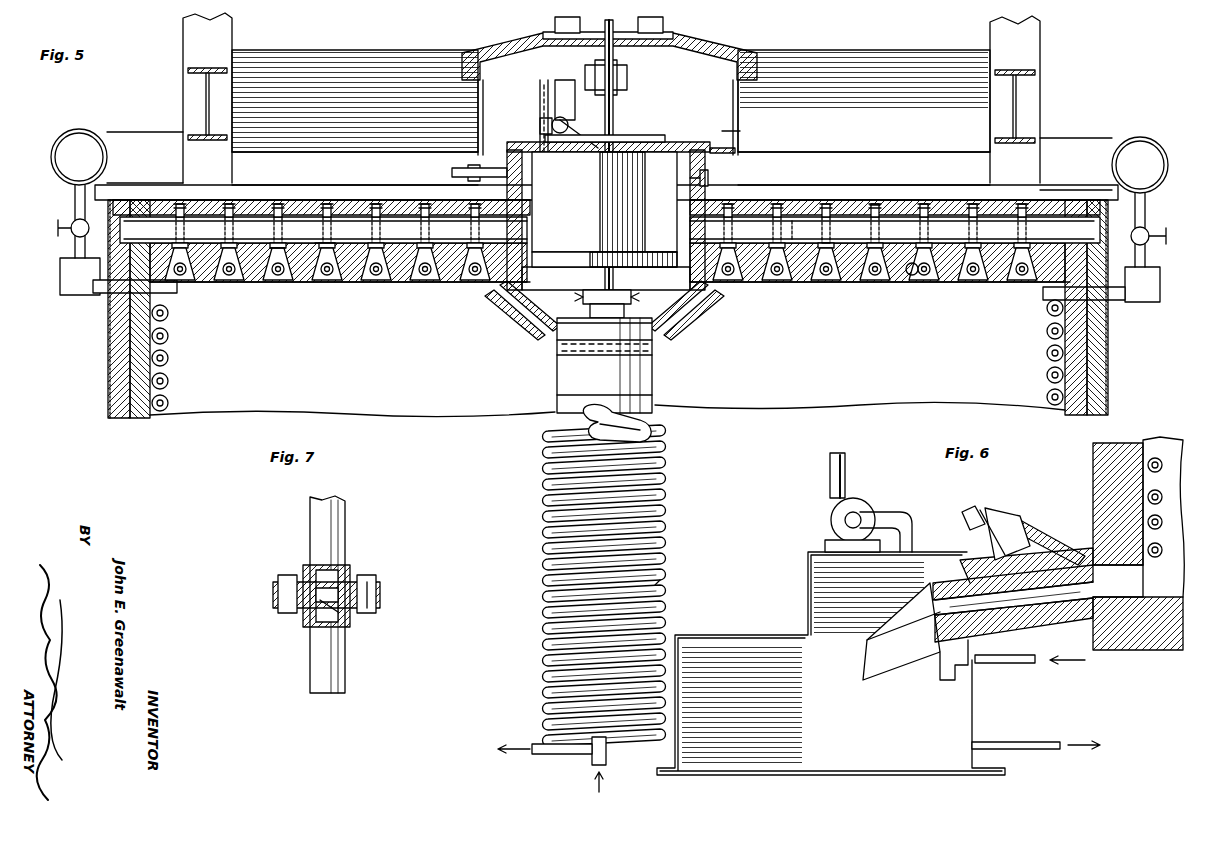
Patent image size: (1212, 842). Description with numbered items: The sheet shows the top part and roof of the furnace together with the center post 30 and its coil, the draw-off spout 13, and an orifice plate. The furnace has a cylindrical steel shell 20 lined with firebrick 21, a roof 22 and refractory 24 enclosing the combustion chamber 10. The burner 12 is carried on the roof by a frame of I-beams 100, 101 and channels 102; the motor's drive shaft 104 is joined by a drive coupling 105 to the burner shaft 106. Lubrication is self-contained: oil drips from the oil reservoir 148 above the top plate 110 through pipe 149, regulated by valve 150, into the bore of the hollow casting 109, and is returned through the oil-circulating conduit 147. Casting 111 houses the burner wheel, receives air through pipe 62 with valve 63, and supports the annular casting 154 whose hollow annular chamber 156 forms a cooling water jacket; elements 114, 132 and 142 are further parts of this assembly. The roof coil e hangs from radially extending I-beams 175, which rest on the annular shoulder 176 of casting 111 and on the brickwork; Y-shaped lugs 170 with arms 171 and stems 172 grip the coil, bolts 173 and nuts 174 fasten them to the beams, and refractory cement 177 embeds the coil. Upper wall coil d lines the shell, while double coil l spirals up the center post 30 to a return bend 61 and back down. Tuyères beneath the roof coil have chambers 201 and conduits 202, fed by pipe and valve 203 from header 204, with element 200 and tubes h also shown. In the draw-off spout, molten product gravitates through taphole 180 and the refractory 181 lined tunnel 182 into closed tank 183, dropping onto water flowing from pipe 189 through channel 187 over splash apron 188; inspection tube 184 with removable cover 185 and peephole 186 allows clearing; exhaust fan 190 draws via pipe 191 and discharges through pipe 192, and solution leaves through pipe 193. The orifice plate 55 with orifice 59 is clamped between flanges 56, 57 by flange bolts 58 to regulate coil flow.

In FIG. 5, the combustion chamber 10 is at (350, 386).
In FIG. 5, the burner 12 is at (541, 361).
In FIG. 6, the draw-off spout 13 is at (1056, 518).
In FIG. 5, the cylindrical steel shell 20 is at (1108, 353).
In FIG. 5, the firebrick 21 is at (1090, 394).
In FIG. 5, the roof 22 is at (330, 138).
In FIG. 5, the refractory 24 is at (358, 197).
In FIG. 5, the center post 30 is at (541, 525).
In FIG. 7, the orifice plate 55 is at (275, 595).
In FIG. 7, the flange 56 is at (346, 570).
In FIG. 7, the flange 57 is at (380, 610).
In FIG. 7, the flange bolts 58 is at (287, 574).
In FIG. 7, the orifice 59 is at (345, 610).
In FIG. 5, the return bend 61 is at (590, 414).
In FIG. 5, the pipe 62 is at (455, 173).
In FIG. 5, the valve 63 is at (468, 164).
In FIG. 5, the I-beam 100 is at (203, 98).
In FIG. 5, the I-beam 101 is at (893, 68).
In FIG. 5, the channels 102 is at (477, 104).
In FIG. 5, the drive shaft 104 is at (665, 52).
In FIG. 5, the drive coupling 105 is at (630, 84).
In FIG. 5, the burner shaft 106 is at (616, 118).
In FIG. 5, the hollow casting 109 is at (628, 187).
In FIG. 5, the top plate 110 is at (660, 146).
In FIG. 5, the casting 111 is at (708, 176).
In FIG. 5, the flange 114 is at (755, 147).
In FIG. 5, the coupling 132 is at (632, 297).
In FIG. 5, the band 142 is at (668, 241).
In FIG. 5, the oil-circulating conduit 147 is at (560, 180).
In FIG. 5, the oil reservoir 148 is at (556, 92).
In FIG. 5, the pipe 149 is at (578, 150).
In FIG. 5, the valve 150 is at (541, 117).
In FIG. 5, the annular casting 154 is at (700, 306).
In FIG. 5, the hollow annular chamber 156 is at (683, 330).
In FIG. 5, the cast iron blocks or lugs 170 is at (862, 283).
In FIG. 5, the arms 171 is at (918, 283).
In FIG. 5, the stem 172 is at (799, 231).
In FIG. 5, the bolts 173 is at (826, 226).
In FIG. 5, the nuts 174 is at (880, 226).
In FIG. 5, the I-beams 175 is at (297, 224).
In FIG. 5, the annular shoulder 176 is at (490, 280).
In FIG. 5, the refractory cement 177 is at (350, 284).
In FIG. 6, the taphole 180 is at (1125, 592).
In FIG. 6, the refractory 181 is at (1040, 628).
In FIG. 6, the tunnel 182 is at (1010, 615).
In FIG. 6, the closed tank 183 is at (766, 637).
In FIG. 6, the inspection tube 184 is at (1055, 524).
In FIG. 6, the removable cover 185 is at (1000, 510).
In FIG. 6, the closed peephole 186 is at (962, 517).
In FIG. 6, the channel 187 is at (955, 670).
In FIG. 6, the splash apron 188 is at (893, 680).
In FIG. 6, the pipe 189 is at (1035, 668).
In FIG. 6, the exhaust fan 190 is at (830, 508).
In FIG. 6, the pipe 191 is at (898, 514).
In FIG. 6, the pipe 192 is at (846, 463).
In FIG. 6, the pipe 193 is at (1002, 750).
In FIG. 5, the fitting 200 is at (58, 292).
In FIG. 5, the tuyère chamber 201 is at (60, 274).
In FIG. 5, the conduit 202 is at (103, 298).
In FIG. 5, the pipe and valve 203 is at (72, 241).
In FIG. 5, the header 204 is at (74, 132).
In FIG. 5, the upper furnace wall coil d is at (170, 356).
In FIG. 5, the roof coil e is at (265, 285).
In FIG. 6, the coil tubes h is at (1157, 458).
In FIG. 5, the coil l is at (658, 545).